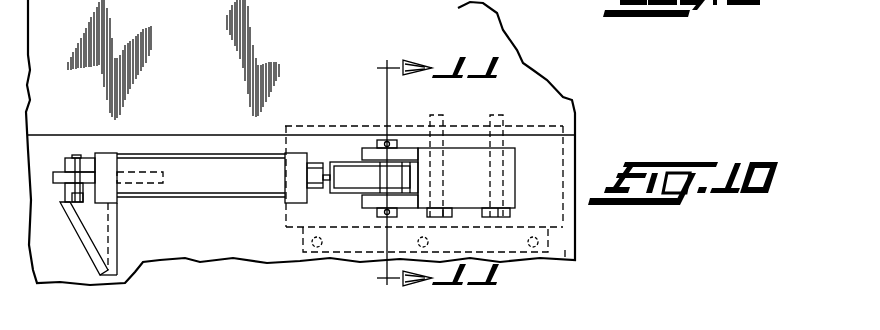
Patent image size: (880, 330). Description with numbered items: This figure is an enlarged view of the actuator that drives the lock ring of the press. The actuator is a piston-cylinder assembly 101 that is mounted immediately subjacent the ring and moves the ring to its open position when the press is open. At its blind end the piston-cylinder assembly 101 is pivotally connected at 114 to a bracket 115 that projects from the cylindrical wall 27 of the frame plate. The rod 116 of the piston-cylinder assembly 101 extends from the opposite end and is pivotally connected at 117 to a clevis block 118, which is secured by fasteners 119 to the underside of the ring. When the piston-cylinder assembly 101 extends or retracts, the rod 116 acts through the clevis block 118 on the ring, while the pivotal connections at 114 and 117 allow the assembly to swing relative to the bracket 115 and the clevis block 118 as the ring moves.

The cylindrical wall 27 is at (263, 257).
The piston-cylinder assembly 101 is at (203, 183).
The pivotal connection 114 is at (75, 155).
The bracket 115 is at (103, 231).
The rod 116 is at (328, 163).
The pivotal connection 117 is at (384, 140).
The clevis block 118 is at (515, 173).
The fasteners 119 is at (512, 215).